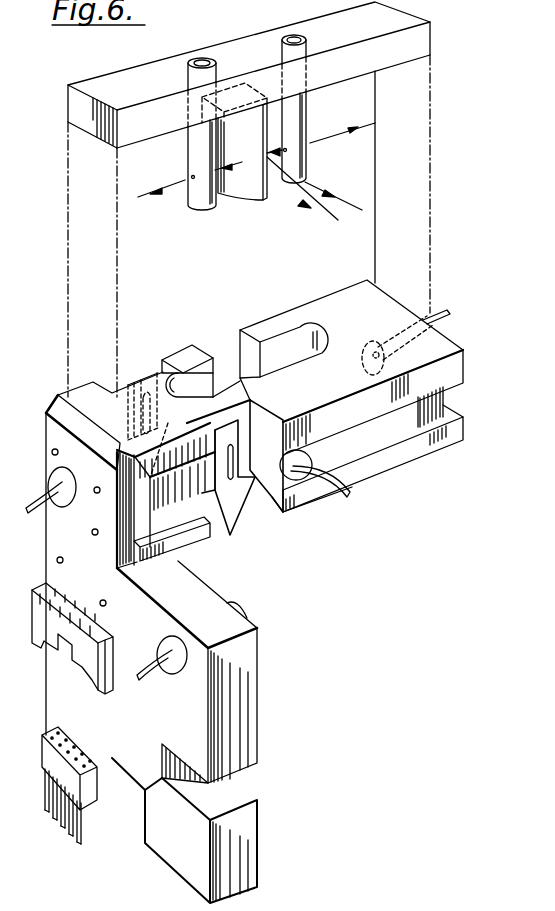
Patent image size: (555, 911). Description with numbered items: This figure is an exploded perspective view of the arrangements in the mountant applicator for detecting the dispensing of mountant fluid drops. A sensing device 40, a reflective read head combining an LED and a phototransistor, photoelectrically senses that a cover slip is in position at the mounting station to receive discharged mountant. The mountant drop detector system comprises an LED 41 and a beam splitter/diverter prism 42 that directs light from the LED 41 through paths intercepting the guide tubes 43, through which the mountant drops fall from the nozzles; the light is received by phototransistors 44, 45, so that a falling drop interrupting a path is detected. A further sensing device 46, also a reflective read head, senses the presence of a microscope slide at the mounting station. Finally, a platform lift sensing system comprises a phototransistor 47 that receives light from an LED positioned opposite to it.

The sensing device 40 is at (145, 368).
The LED 41 is at (300, 485).
The beam splitter/diverter prism 42 is at (250, 187).
The guide tubes 43 is at (197, 147).
The phototransistor 44 is at (50, 476).
The phototransistor 45 is at (383, 350).
The sensing device 46 is at (228, 522).
The phototransistor 47 is at (245, 611).